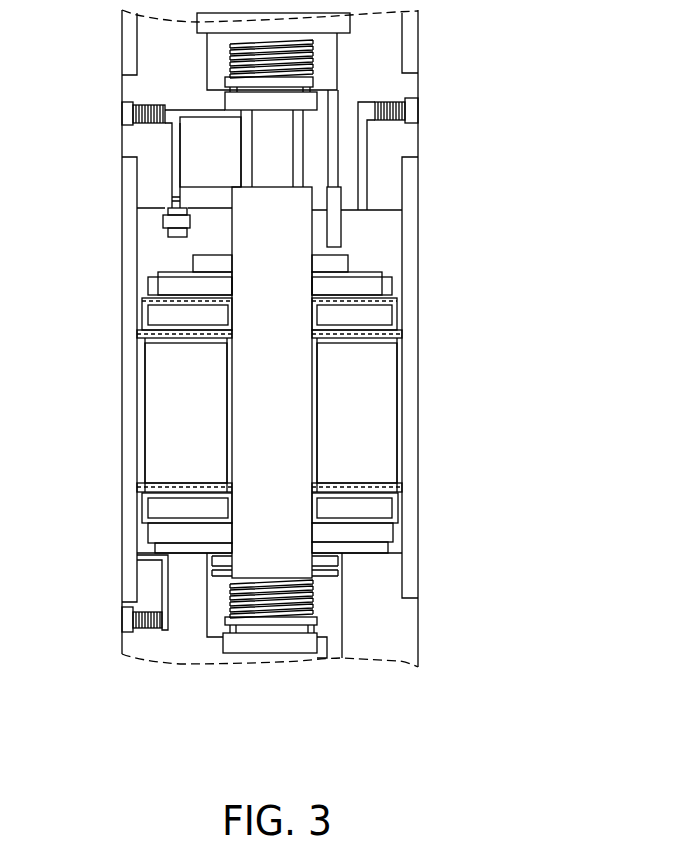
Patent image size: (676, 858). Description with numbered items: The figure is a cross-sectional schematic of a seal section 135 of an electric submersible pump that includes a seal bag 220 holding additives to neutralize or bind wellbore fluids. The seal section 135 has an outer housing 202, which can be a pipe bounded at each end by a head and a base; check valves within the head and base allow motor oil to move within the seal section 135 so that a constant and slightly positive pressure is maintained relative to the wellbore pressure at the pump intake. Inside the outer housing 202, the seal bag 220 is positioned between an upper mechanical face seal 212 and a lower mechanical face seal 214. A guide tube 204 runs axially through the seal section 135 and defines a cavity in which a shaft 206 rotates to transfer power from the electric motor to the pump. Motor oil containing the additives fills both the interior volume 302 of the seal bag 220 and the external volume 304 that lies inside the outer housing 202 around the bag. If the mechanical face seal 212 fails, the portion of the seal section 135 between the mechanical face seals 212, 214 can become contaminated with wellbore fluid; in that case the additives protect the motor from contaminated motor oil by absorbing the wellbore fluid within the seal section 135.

The seal section 135 is at (572, 322).
The outer housing 202 is at (418, 493).
The guide tube 204 is at (280, 405).
The shaft 206 is at (278, 163).
The mechanical face seal 212 is at (268, 100).
The mechanical face seal 214 is at (283, 642).
The seal bag 220 is at (162, 315).
The interior volume 302 is at (160, 447).
The external volume 304 is at (368, 243).